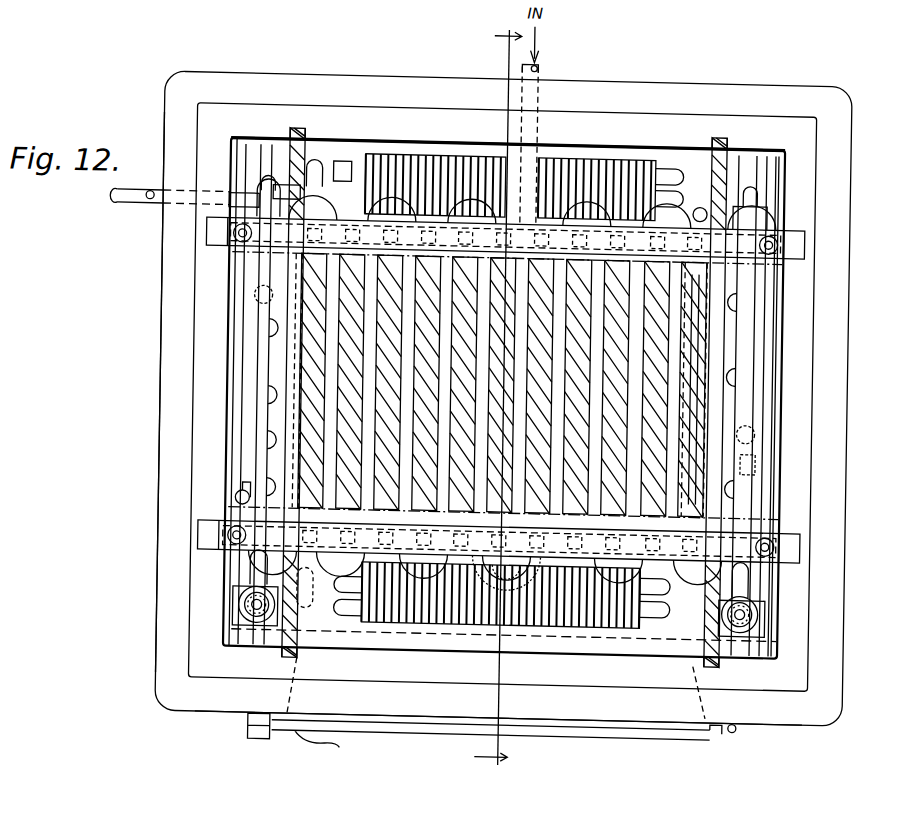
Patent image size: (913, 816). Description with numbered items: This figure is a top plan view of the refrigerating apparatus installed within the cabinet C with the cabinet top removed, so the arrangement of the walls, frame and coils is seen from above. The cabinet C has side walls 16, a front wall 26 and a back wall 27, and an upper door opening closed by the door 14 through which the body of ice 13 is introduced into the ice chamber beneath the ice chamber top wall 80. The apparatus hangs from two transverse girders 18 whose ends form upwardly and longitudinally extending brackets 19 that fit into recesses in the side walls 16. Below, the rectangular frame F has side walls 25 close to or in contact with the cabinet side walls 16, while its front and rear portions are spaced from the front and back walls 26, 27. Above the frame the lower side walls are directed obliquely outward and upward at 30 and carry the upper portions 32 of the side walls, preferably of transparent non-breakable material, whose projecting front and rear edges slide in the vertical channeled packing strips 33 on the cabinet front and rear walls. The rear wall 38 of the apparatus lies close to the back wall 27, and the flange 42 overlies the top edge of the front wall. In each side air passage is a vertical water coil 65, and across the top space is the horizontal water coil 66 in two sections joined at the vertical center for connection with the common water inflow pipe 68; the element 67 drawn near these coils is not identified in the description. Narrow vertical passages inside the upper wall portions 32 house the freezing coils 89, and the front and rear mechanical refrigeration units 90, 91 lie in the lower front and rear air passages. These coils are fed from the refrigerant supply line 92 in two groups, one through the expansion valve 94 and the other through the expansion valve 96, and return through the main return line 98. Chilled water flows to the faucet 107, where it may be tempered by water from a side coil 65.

The body of ice 13 is at (486, 397).
The door 14 is at (385, 730).
The side walls 16 is at (208, 432).
The girders 18 is at (551, 261).
The brackets 19 is at (204, 245).
The side walls 25 is at (227, 476).
The front wall 26 is at (793, 715).
The back wall 27 is at (701, 75).
The obliquely directed portion 30 is at (323, 606).
The upper portion of side wall 32 is at (289, 183).
The channeled packing strips 33 is at (293, 133).
The rear wall 38 is at (581, 150).
The flange 42 is at (619, 640).
The vertical water coil 65 is at (257, 363).
The horizontal water coil 66 is at (367, 351).
The scalloped member 67 is at (523, 603).
The water inflow pipe 68 is at (534, 64).
The ice chamber top wall 80 is at (542, 385).
The freezing coil 89 is at (316, 459).
The front refrigerating unit 90 is at (441, 623).
The rear refrigerating unit 91 is at (428, 167).
The refrigerant supply line 92 is at (146, 199).
The expansion valve 94 is at (763, 606).
The expansion valve 96 is at (240, 611).
The main return line 98 is at (111, 205).
The faucet 107 is at (240, 503).
The cabinet C is at (159, 391).
The rectangular frame F is at (776, 321).